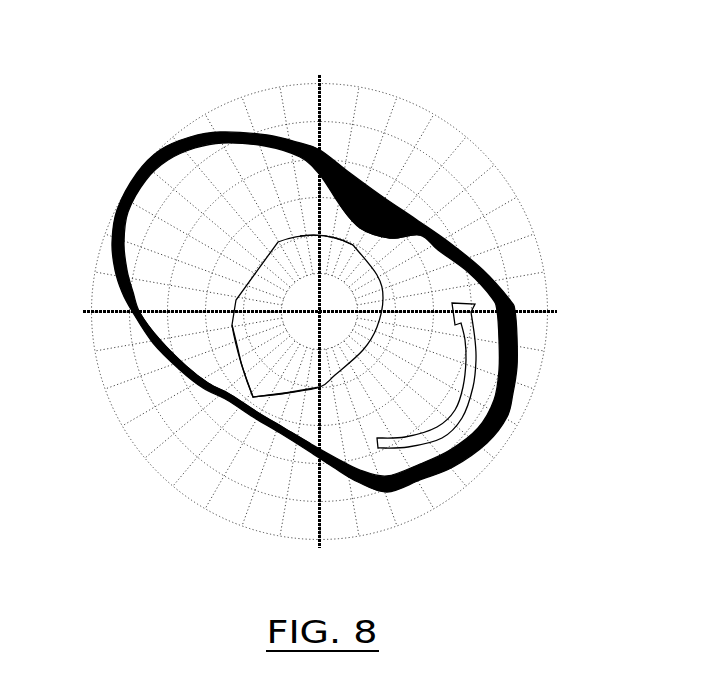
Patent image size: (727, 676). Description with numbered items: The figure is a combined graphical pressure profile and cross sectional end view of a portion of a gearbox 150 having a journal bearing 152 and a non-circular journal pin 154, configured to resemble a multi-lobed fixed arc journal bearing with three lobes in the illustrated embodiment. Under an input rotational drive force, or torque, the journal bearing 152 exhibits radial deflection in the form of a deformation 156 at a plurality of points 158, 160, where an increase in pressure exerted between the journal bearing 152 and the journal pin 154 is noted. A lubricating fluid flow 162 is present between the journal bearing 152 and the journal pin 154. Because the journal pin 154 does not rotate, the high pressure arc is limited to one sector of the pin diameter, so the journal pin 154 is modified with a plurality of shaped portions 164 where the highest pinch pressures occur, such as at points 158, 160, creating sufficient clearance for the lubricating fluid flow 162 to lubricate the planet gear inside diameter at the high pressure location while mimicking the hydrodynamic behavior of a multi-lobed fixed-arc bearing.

The gearbox 150 is at (524, 70).
The journal bearing 152 is at (510, 302).
The journal pin 154 is at (282, 318).
The deformation 156 is at (381, 182).
The point 158 is at (389, 222).
The point 160 is at (283, 443).
The lubricating fluid flow 162 is at (417, 443).
The shaped portions 164 is at (342, 246).